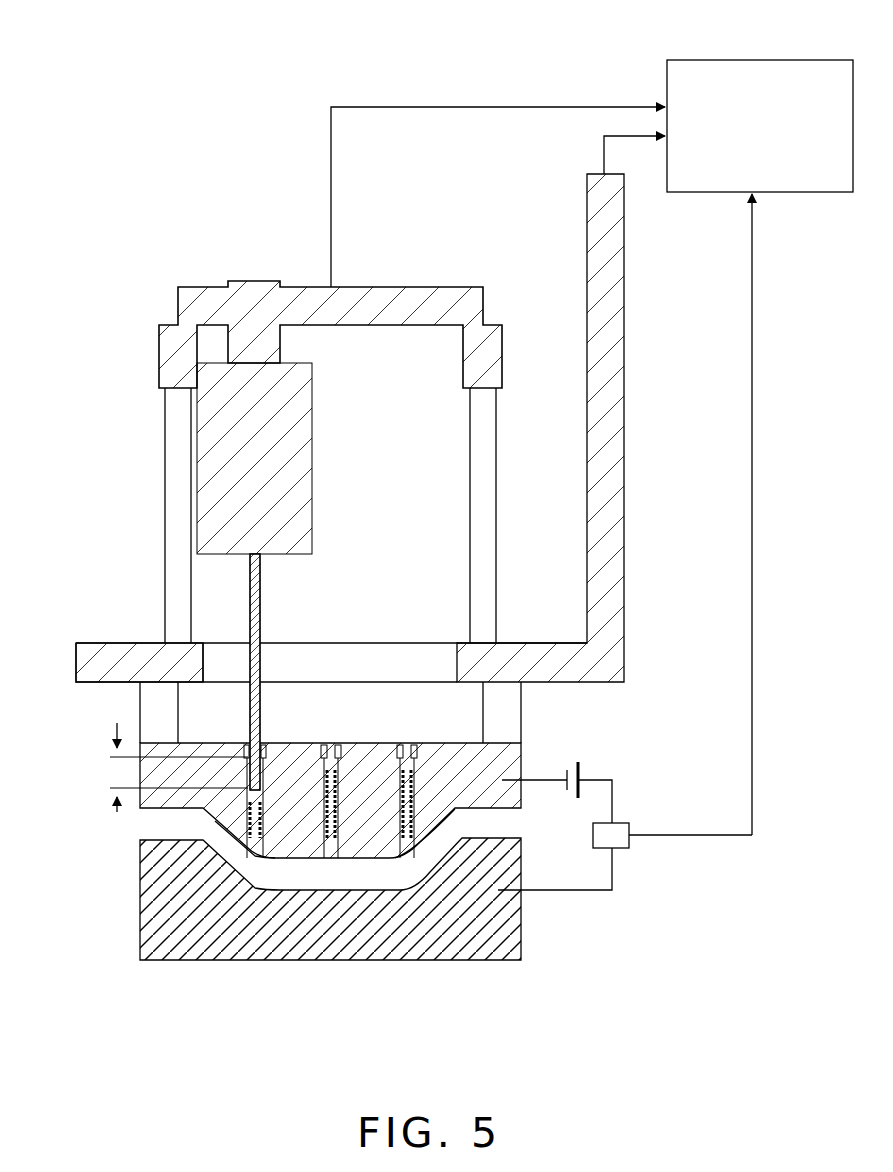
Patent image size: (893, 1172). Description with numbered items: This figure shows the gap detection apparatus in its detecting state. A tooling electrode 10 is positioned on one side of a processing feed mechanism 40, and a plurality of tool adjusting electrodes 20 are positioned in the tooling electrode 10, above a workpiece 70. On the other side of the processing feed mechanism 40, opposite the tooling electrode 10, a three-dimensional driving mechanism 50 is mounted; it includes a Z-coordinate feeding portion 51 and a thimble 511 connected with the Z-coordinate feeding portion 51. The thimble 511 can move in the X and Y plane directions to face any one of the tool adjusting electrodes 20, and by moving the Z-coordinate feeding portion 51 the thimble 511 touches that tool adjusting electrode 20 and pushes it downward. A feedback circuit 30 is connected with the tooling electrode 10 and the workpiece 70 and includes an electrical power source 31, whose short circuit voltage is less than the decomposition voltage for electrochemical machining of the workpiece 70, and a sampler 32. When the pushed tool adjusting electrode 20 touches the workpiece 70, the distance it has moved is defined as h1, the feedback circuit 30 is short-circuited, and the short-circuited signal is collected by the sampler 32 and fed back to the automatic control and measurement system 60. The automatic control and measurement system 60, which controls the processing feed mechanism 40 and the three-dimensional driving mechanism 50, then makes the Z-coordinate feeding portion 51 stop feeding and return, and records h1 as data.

The tooling electrode 10 is at (215, 821).
The tool adjusting electrodes 20 is at (253, 868).
The feedback circuit 30 is at (625, 807).
The electrical power source 31 is at (580, 768).
The sampler 32 is at (622, 849).
The processing feed mechanism 40 is at (618, 322).
The 3D driving mechanism 50 is at (170, 347).
The Z-coordinate feeding portion 51 is at (220, 458).
The thimble 511 is at (253, 577).
The automatic control and measurement system 60 is at (772, 60).
The workpiece 70 is at (157, 931).
The moving distance of the tool adjusting electrode h1 is at (166, 767).